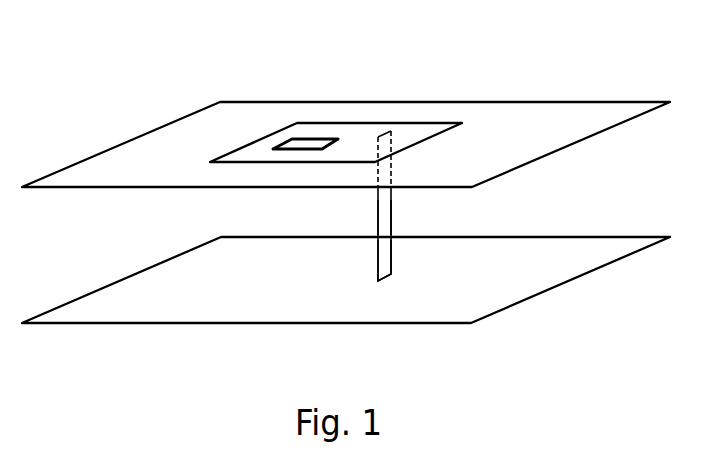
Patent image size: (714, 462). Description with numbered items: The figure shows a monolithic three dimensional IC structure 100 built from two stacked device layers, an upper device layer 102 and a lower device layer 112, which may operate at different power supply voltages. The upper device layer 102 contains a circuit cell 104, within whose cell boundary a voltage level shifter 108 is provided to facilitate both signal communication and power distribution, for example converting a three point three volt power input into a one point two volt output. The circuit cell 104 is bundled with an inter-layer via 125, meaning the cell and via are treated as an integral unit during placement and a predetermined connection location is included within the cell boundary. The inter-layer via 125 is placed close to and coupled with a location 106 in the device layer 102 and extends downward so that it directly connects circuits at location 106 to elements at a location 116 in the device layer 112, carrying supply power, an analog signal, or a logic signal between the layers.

The monolithic three dimensional IC structure 100 is at (170, 50).
The device layer 102 is at (346, 144).
The circuit cell 104 is at (355, 133).
The location 106 is at (385, 130).
The voltage level shifter 108 is at (305, 145).
The device layer 112 is at (346, 280).
The location 116 is at (387, 280).
The inter-layer via 125 is at (385, 203).